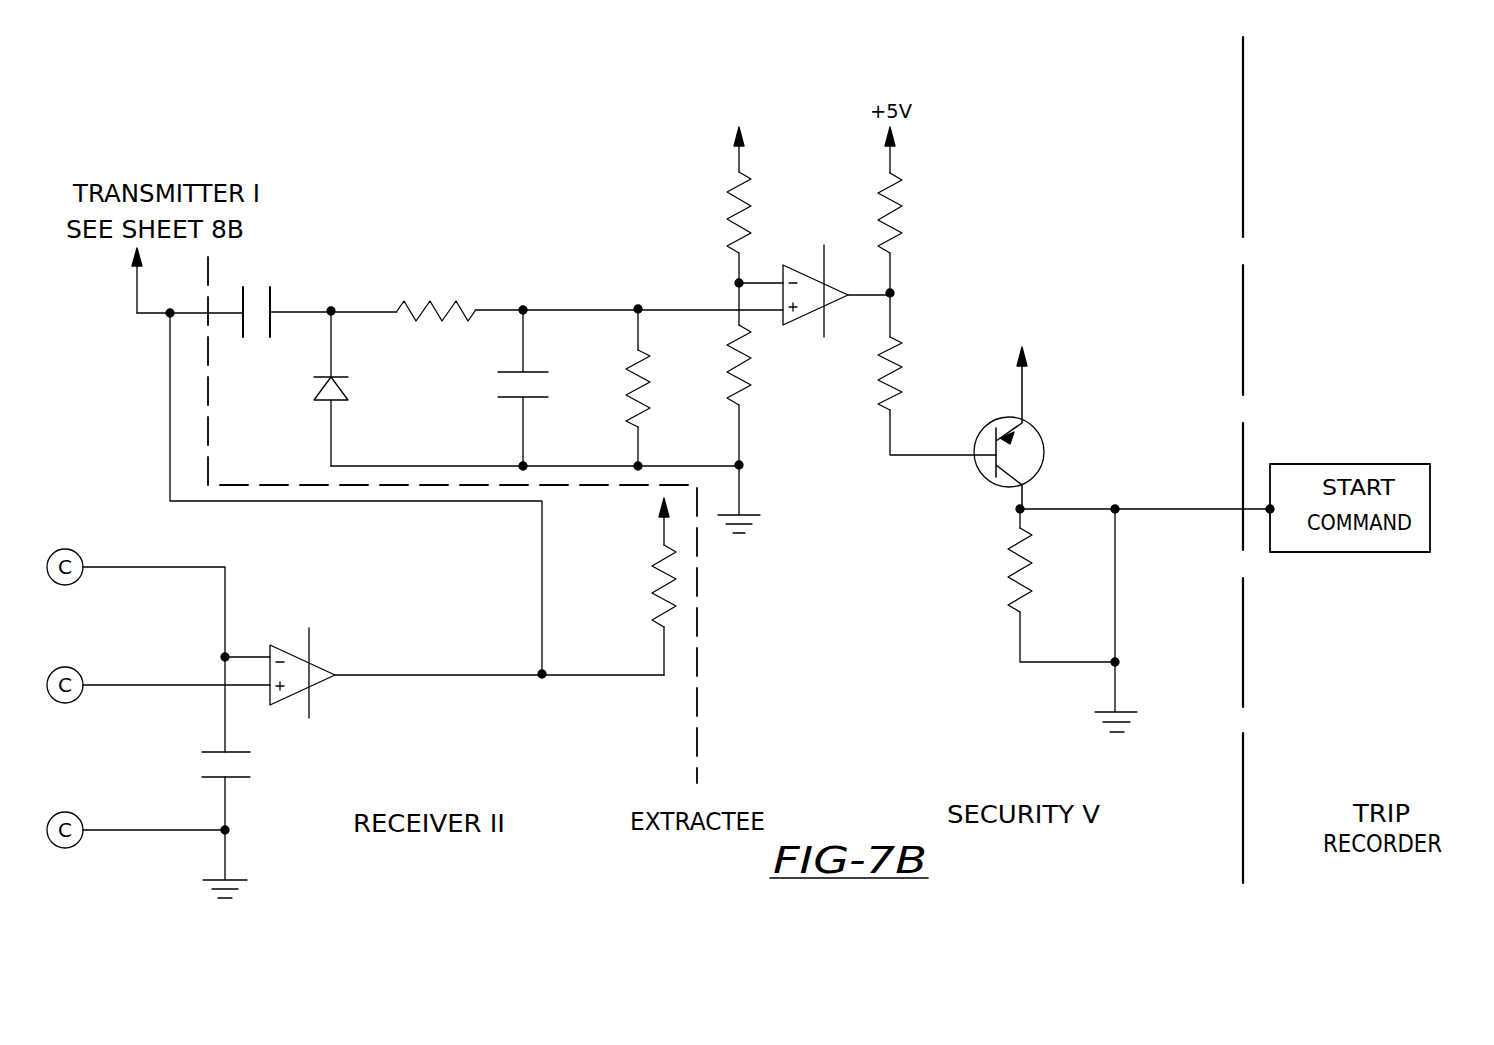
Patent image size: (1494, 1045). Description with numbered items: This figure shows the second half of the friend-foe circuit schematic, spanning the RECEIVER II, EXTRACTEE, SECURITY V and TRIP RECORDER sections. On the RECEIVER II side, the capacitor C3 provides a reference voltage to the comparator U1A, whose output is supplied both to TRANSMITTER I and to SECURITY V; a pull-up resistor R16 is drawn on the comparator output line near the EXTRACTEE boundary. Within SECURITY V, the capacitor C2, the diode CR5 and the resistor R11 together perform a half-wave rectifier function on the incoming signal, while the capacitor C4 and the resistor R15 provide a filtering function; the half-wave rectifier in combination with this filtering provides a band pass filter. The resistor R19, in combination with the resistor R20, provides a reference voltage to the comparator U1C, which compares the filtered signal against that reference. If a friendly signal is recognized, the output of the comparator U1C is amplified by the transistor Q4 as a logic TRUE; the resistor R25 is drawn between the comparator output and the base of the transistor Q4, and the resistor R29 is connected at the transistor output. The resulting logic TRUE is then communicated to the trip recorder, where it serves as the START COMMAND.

The capacitor C2 is at (256, 297).
The resistor R11 is at (436, 291).
The diode CR5 is at (350, 388).
The capacitor C4 is at (539, 388).
The resistor R15 is at (666, 387).
The resistor R19 is at (763, 191).
The resistor R20 is at (764, 374).
The comparator U1C is at (814, 289).
The base resistor R25 is at (937, 374).
The transistor Q4 is at (999, 416).
The emitter resistor R29 is at (1063, 587).
The pull-up resistor R16 is at (634, 584).
The comparator U1A is at (444, 669).
The capacitor C3 is at (251, 766).